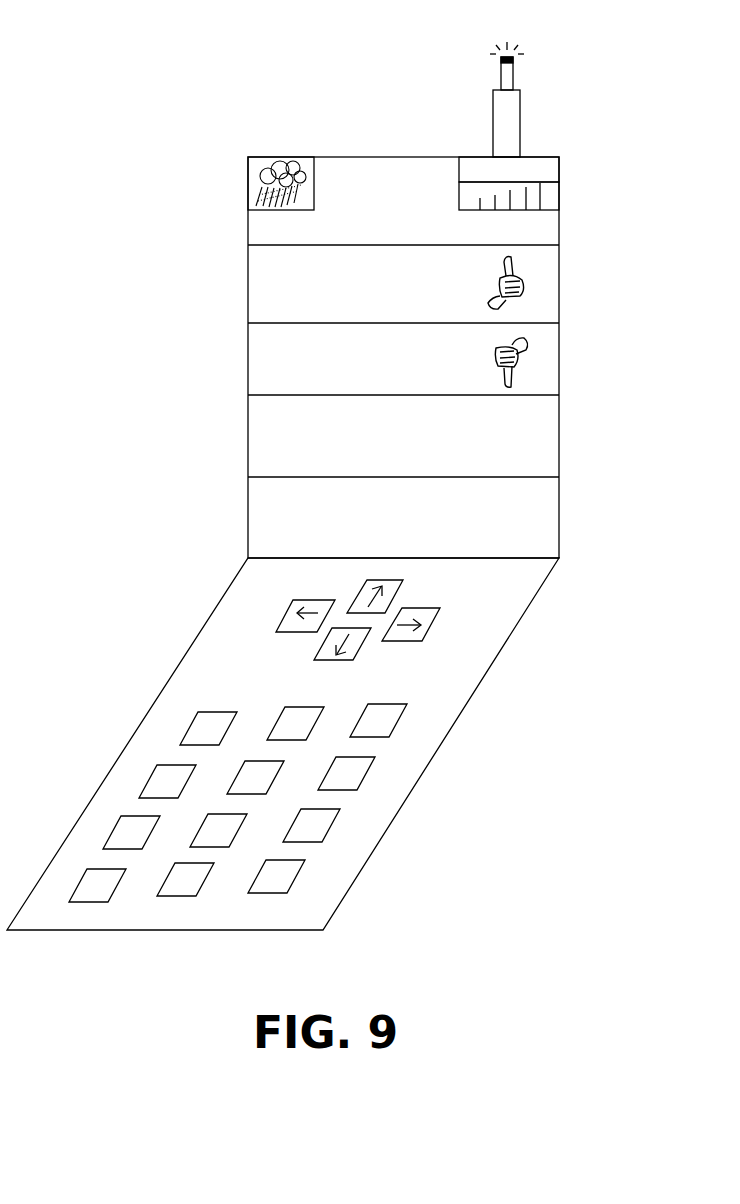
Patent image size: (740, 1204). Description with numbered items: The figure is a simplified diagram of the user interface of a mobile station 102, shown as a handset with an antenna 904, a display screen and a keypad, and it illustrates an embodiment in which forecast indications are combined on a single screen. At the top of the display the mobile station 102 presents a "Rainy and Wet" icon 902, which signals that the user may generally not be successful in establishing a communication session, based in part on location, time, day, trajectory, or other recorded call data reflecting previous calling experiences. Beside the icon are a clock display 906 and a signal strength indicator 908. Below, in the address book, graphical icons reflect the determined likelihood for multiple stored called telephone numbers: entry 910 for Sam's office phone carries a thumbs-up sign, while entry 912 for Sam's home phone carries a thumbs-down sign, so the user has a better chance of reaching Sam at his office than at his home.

The mobile station 102 is at (214, 117).
The "Rainy and Wet" icon 902 is at (247, 183).
The antenna 904 is at (512, 79).
The clock display 906 is at (560, 170).
The signal strength indicator 908 is at (560, 196).
The entry 910 is at (541, 278).
The entry 912 is at (541, 350).